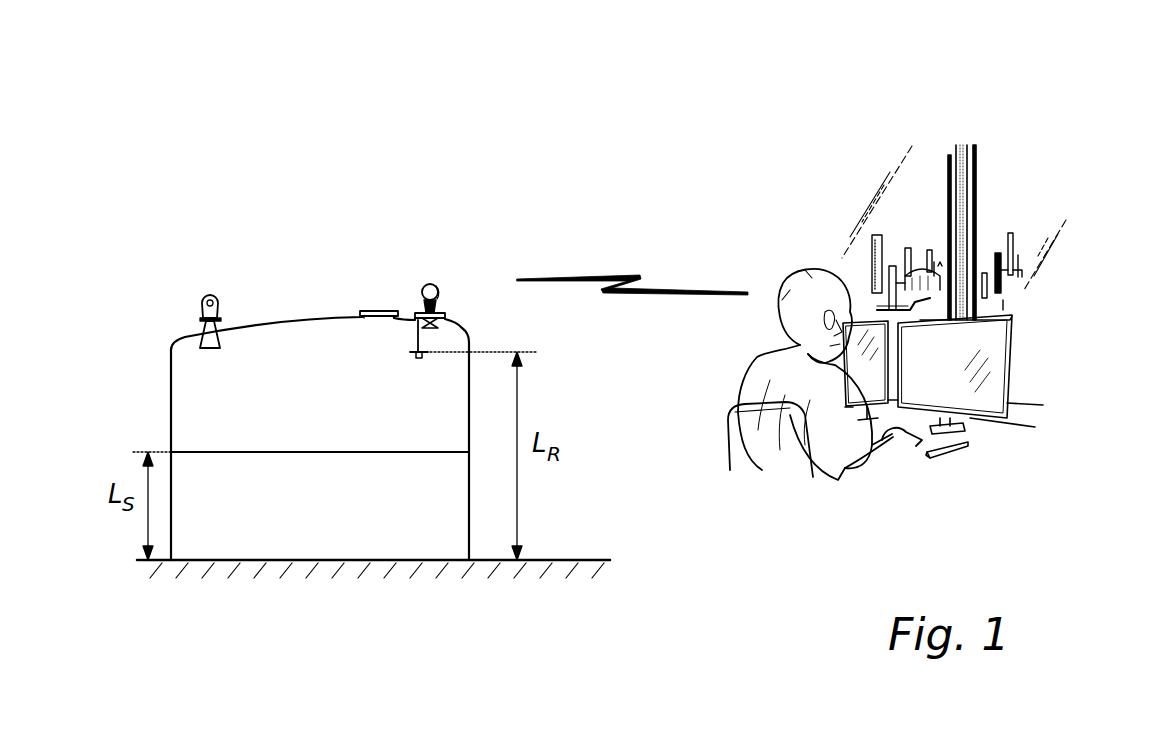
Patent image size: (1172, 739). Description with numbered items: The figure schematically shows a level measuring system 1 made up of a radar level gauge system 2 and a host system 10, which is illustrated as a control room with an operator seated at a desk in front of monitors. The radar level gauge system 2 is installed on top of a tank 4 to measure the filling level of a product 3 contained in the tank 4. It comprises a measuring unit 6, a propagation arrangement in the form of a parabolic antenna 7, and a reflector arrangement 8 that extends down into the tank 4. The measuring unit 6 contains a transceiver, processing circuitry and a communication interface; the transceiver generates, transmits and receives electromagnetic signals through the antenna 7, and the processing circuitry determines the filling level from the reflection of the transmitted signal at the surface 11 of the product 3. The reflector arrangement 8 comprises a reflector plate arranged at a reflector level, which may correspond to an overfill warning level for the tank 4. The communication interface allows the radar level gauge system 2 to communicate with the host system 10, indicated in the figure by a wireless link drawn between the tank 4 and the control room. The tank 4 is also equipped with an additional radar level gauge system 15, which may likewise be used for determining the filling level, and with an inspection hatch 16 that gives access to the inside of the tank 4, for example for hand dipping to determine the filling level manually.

The level measuring system 1 is at (630, 110).
The radar level gauge system 2 is at (446, 301).
The product 3 is at (361, 447).
The tank 4 is at (171, 396).
The measuring unit 6 is at (431, 285).
The parabolic antenna 7 is at (444, 315).
The reflector arrangement 8 is at (426, 370).
The host system 10 is at (1090, 244).
The surface 11 is at (290, 452).
The additional radar level gauge system 15 is at (234, 275).
The inspection hatch 16 is at (382, 311).